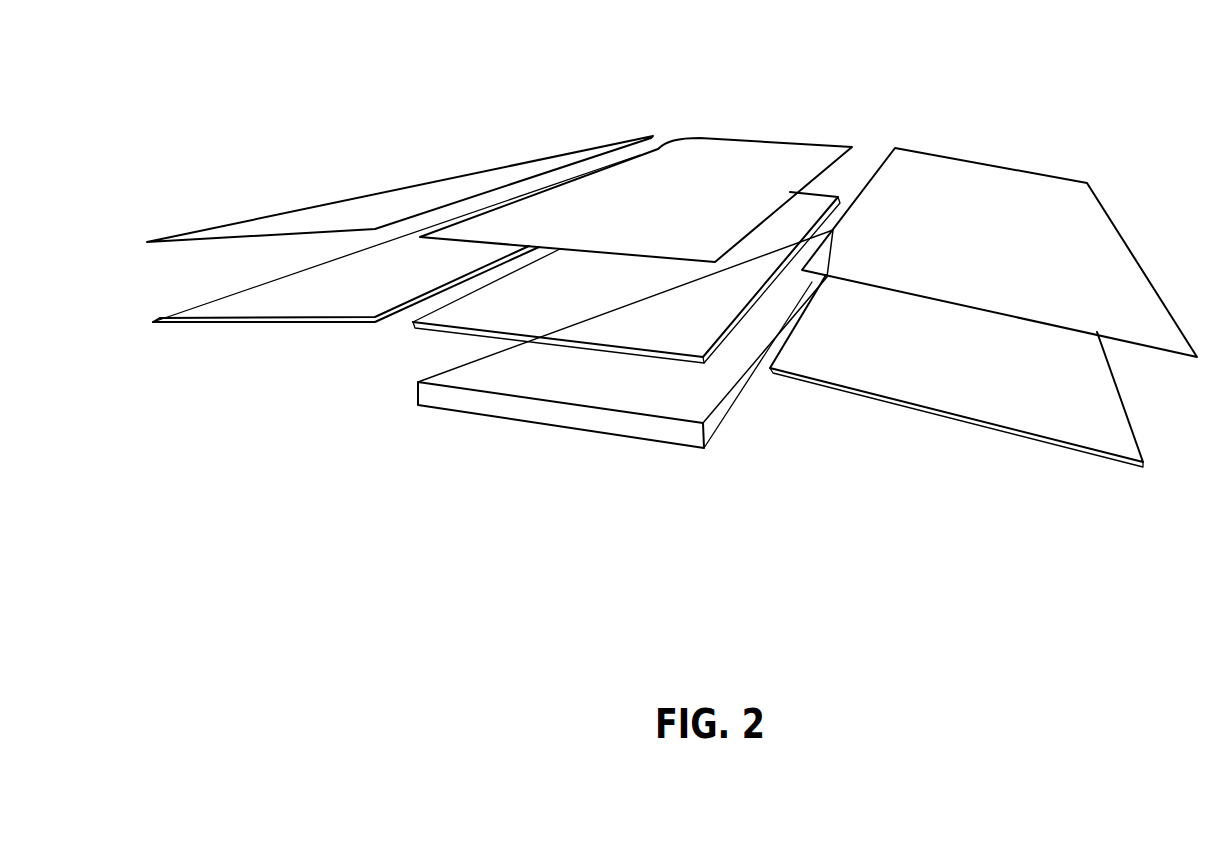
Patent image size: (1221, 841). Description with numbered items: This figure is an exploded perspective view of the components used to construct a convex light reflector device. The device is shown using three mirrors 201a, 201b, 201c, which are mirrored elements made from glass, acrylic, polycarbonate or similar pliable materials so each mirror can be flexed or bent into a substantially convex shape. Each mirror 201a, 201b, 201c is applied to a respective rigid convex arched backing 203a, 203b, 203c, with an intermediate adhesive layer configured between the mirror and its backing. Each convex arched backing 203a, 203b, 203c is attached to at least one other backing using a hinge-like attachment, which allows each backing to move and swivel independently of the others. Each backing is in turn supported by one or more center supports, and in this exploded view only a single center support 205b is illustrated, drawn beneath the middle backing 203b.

The mirror 201a is at (552, 145).
The mirror 201b is at (750, 147).
The mirror 201c is at (1002, 168).
The rigid convex arched backing 203a is at (175, 323).
The rigid convex arched backing 203b is at (425, 330).
The rigid convex arched backing 203c is at (978, 422).
The center support 205b is at (587, 430).